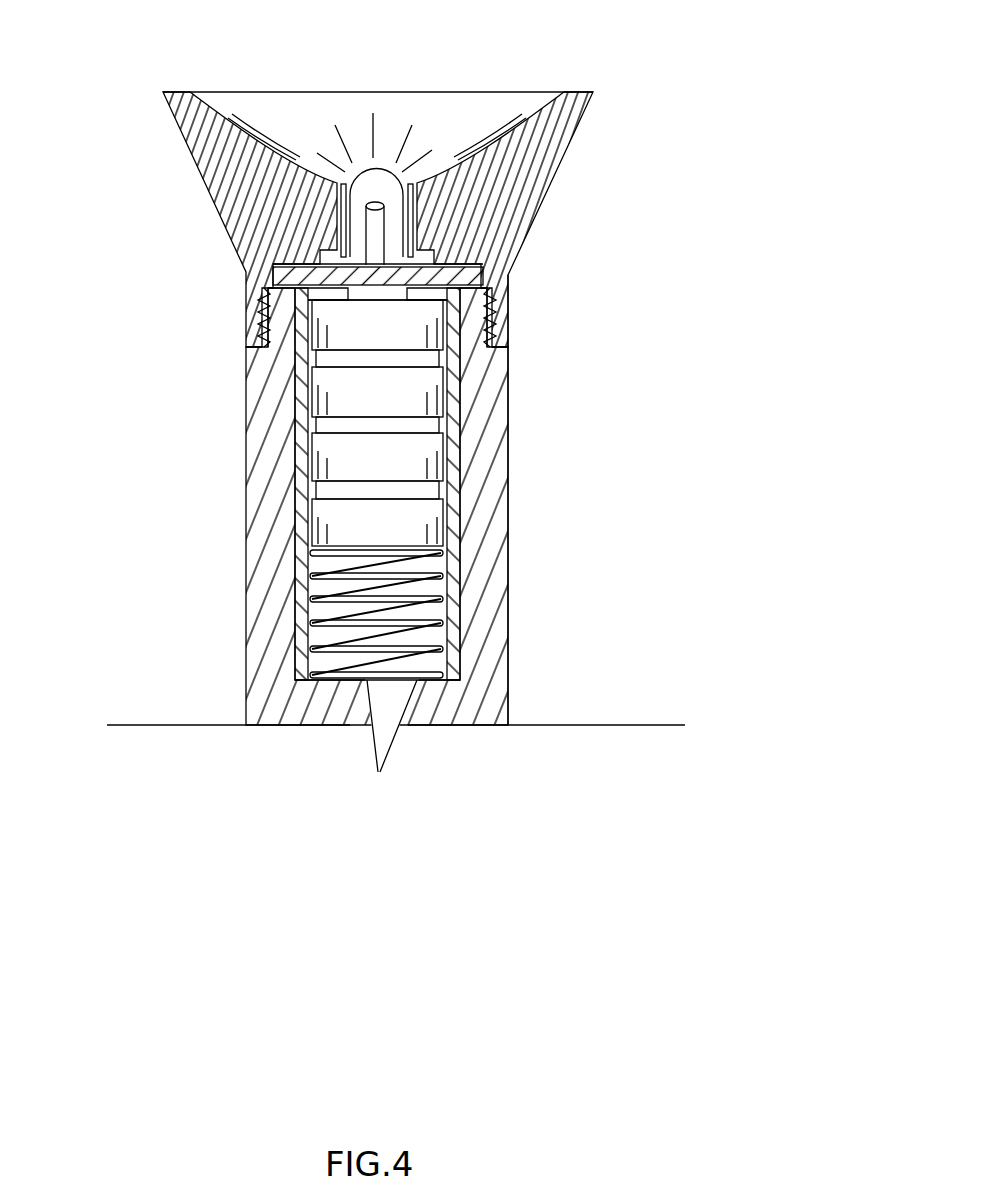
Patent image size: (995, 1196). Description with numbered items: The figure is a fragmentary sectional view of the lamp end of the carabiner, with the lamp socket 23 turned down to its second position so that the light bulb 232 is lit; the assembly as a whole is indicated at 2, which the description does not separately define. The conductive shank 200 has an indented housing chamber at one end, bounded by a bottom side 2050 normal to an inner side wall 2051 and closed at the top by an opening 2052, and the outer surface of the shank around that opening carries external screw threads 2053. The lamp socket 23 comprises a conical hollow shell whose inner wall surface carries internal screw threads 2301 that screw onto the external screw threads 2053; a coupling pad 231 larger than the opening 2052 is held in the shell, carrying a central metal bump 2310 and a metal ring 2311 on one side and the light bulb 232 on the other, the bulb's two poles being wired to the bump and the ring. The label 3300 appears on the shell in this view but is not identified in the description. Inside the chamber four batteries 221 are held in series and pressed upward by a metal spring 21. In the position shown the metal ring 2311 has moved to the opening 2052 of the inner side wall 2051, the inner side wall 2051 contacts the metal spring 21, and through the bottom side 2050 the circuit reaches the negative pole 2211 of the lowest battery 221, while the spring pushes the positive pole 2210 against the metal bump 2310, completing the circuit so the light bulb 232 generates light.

The flashlight head assembly 2 is at (400, 388).
The lamp socket 23 is at (605, 92).
The reflective layer of reflector 3300 is at (551, 118).
The coupling pad 231 is at (350, 182).
The light bulb 232 is at (400, 170).
The opening 2052 is at (273, 267).
The metal ring 2311 is at (262, 295).
The internal screw threads 2301 is at (488, 305).
The positive pole 2210 is at (272, 328).
The metal bump 2310 is at (493, 295).
The external screw threads 2053 is at (495, 343).
The inner side wall 2051 is at (500, 433).
The bottom side 2050 is at (452, 712).
The shank 200 is at (478, 687).
The metal spring 21 is at (310, 607).
The battery 221 is at (407, 338).
The negative pole 2211 is at (445, 562).